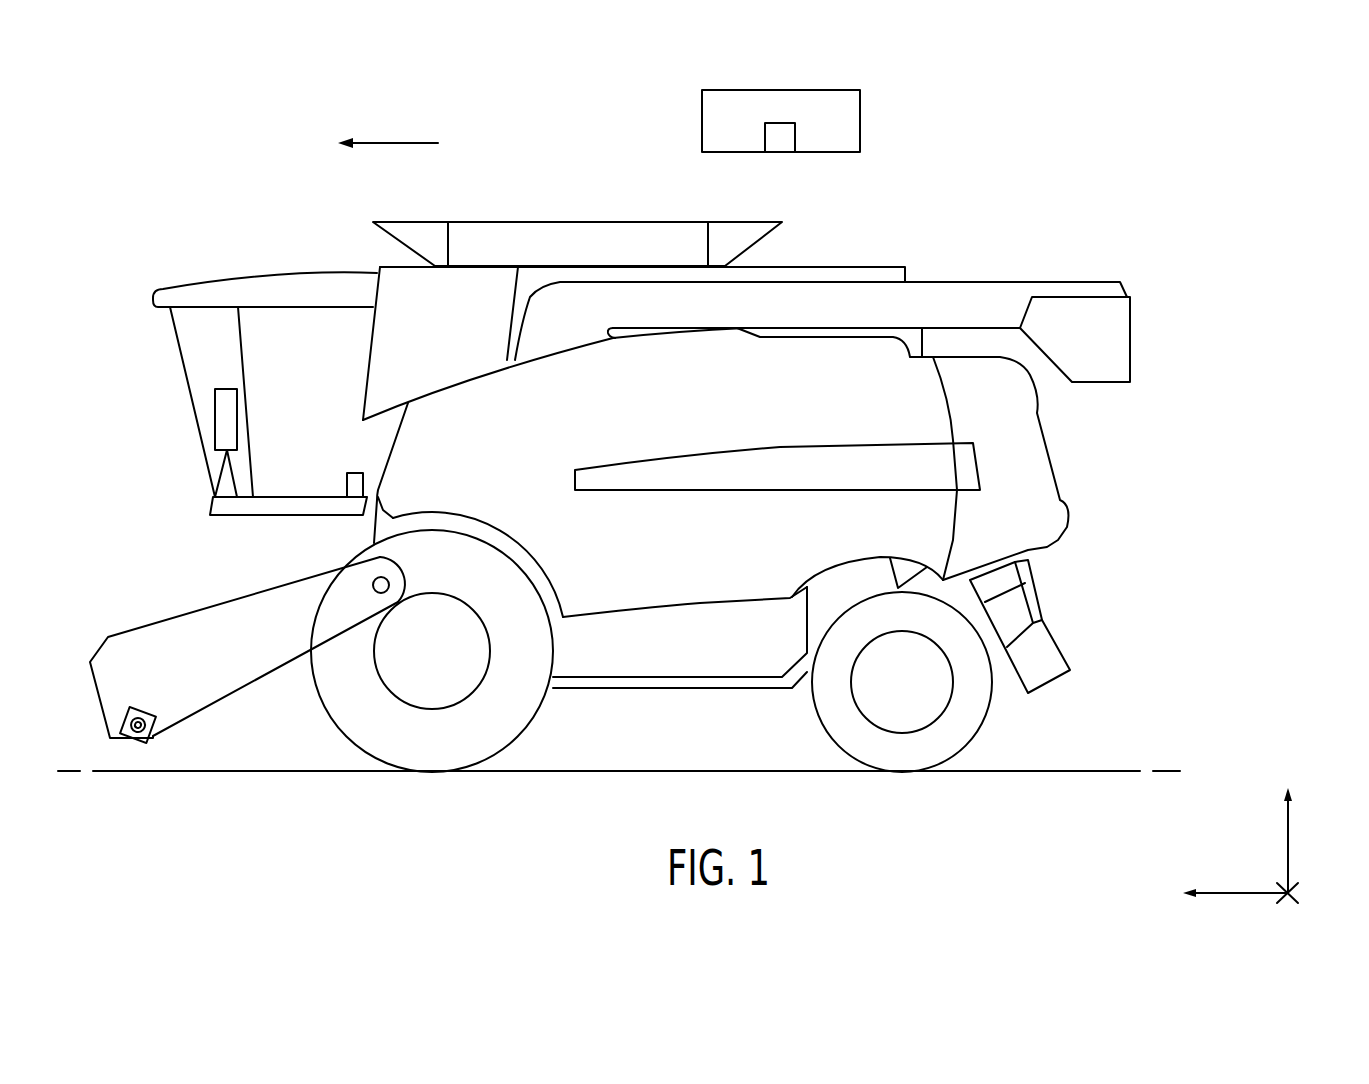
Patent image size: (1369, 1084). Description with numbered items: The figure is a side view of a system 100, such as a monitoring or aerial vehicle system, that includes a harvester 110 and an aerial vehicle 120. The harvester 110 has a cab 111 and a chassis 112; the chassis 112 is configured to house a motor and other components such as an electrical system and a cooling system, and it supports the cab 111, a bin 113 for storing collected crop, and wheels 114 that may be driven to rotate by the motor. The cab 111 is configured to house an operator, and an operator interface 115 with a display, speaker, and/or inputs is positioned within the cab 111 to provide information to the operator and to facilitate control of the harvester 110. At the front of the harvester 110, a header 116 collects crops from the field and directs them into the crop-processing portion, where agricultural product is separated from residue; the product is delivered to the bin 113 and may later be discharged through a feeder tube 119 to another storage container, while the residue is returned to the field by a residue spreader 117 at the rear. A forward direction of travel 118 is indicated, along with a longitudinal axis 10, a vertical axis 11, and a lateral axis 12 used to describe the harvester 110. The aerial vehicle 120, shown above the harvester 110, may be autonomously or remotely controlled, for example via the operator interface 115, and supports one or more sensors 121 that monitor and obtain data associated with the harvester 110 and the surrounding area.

The system 100 is at (1100, 117).
The harvester 110 is at (1062, 220).
The cab 111 is at (278, 285).
The chassis 112 is at (652, 682).
The bin 113 is at (835, 363).
The wheels 114 is at (963, 730).
The operator interface 115 is at (215, 420).
The header 116 is at (160, 640).
The residue spreader 117 is at (1058, 645).
The forward direction of travel 118 is at (395, 143).
The feeder tube 119 is at (930, 297).
The aerial vehicle 120 is at (880, 99).
The sensors 121 is at (780, 123).
The longitudinal axis 10 is at (1255, 893).
The vertical axis 11 is at (1289, 848).
The lateral axis 12 is at (1284, 902).